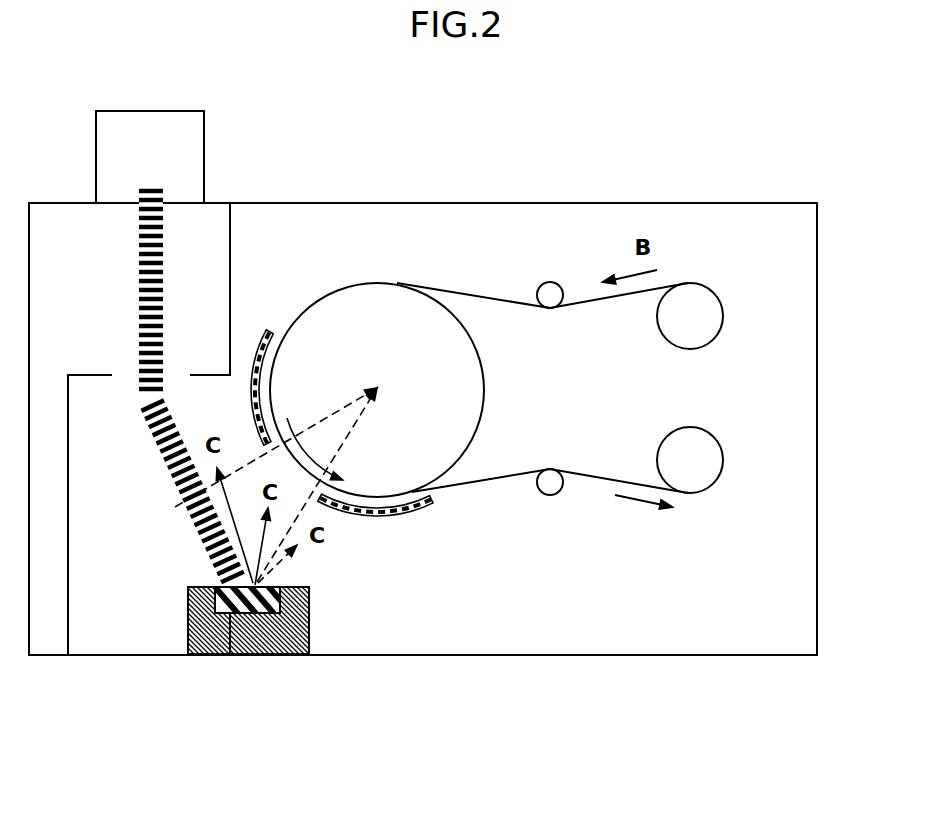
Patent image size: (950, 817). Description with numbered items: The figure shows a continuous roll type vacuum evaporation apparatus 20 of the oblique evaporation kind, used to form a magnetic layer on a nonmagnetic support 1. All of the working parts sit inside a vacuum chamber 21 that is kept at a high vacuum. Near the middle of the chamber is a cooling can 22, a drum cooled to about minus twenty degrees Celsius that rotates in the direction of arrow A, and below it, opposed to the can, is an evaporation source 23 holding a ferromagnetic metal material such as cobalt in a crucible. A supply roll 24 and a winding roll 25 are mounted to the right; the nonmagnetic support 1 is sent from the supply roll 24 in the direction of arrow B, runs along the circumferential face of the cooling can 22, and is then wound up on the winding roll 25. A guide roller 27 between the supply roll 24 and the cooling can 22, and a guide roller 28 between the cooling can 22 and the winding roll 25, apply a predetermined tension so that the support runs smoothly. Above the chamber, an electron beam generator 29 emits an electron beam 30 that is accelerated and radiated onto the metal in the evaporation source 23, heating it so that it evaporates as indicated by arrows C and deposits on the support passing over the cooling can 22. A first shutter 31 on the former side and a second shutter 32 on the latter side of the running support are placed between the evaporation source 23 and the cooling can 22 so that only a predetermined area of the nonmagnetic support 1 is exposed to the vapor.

The vacuum evaporation apparatus 20 is at (650, 712).
The vacuum chamber 21 is at (818, 400).
The cooling can 22 is at (348, 315).
The evaporation source 23 is at (232, 655).
The supply roll 24 is at (712, 307).
The winding roll 25 is at (712, 475).
The guide roller 27 is at (550, 290).
The guide roller 28 is at (548, 470).
The electron beam generator 29 is at (182, 115).
The electron beam 30 is at (139, 300).
The first shutter 31 is at (270, 329).
The second shutter 32 is at (415, 511).
The nonmagnetic support 1 is at (513, 303).